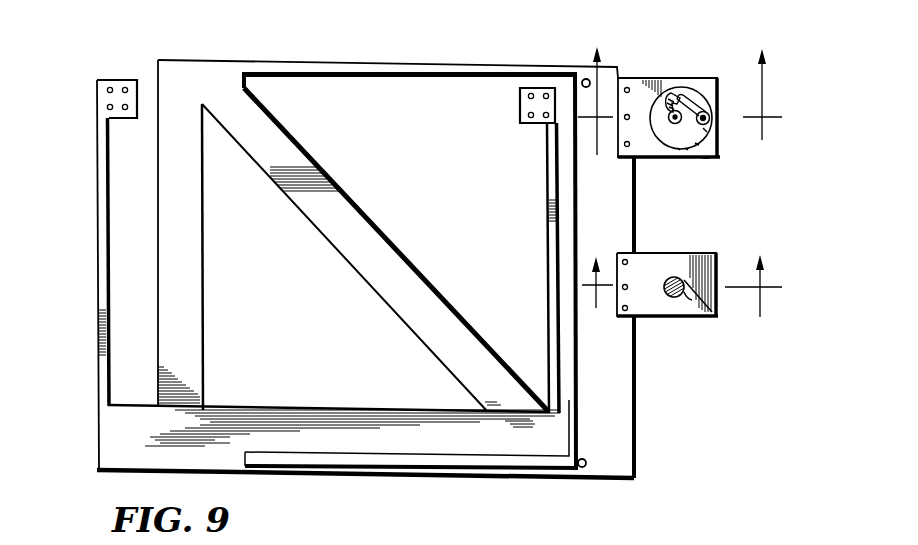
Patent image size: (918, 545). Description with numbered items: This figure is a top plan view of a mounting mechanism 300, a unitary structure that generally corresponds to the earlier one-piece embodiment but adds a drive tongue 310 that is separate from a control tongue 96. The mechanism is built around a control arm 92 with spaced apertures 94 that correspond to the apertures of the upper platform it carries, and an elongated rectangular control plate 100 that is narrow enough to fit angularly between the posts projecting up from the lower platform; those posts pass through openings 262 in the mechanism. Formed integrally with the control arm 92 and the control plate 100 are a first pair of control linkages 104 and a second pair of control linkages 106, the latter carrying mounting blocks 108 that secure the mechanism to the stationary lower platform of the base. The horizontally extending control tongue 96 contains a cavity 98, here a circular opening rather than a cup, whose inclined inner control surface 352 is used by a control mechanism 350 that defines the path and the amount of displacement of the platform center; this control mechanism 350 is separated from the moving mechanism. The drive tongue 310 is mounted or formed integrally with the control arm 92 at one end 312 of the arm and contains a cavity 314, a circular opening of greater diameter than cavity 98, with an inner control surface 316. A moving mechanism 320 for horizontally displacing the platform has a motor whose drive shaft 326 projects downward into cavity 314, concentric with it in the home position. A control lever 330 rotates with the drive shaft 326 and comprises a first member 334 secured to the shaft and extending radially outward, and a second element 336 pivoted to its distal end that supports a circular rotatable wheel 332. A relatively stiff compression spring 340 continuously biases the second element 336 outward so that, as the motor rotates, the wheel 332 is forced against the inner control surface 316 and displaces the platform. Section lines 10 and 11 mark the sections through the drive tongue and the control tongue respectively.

The control arm 92 is at (623, 428).
The apertures 94 is at (584, 79).
The control tongue 96 is at (658, 318).
The cavity 98 is at (715, 318).
The control plate 100 is at (377, 250).
The first pair of control linkages 104 is at (378, 77).
The second pair of control linkages 106 is at (101, 285).
The mounting blocks 108 is at (97, 92).
The openings 262 is at (312, 361).
The mounting mechanism 300 is at (687, 124).
The drive tongue 310 is at (689, 80).
The end of the control arm 312 is at (636, 78).
The cavity 314 is at (697, 145).
The inner control surface 316 is at (687, 149).
The mechanism for moving the mounting mechanism 320 is at (706, 170).
The drive shaft 326 is at (679, 149).
The control lever 330 is at (700, 93).
The circular rotatable wheel 332 is at (705, 130).
The first member 334 is at (672, 124).
The second element 336 is at (711, 105).
The compression spring 340 is at (680, 93).
The control mechanism 350 is at (685, 300).
The inclined inner control surface 352 is at (684, 297).
The section line 10- 10 is at (680, 114).
The section line 11- 11 is at (680, 301).